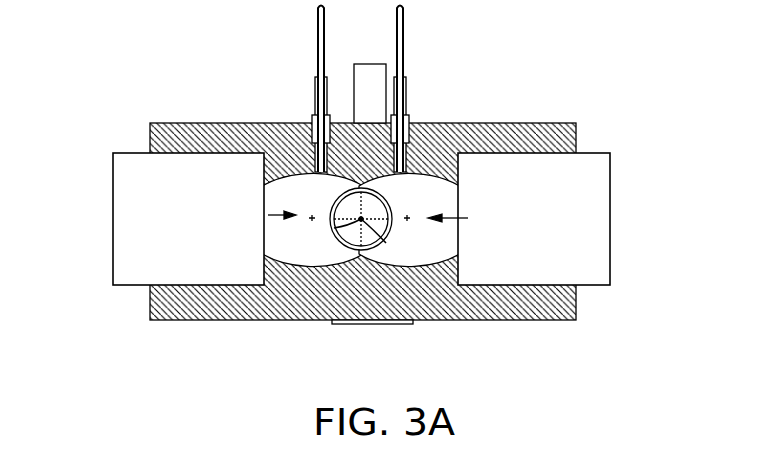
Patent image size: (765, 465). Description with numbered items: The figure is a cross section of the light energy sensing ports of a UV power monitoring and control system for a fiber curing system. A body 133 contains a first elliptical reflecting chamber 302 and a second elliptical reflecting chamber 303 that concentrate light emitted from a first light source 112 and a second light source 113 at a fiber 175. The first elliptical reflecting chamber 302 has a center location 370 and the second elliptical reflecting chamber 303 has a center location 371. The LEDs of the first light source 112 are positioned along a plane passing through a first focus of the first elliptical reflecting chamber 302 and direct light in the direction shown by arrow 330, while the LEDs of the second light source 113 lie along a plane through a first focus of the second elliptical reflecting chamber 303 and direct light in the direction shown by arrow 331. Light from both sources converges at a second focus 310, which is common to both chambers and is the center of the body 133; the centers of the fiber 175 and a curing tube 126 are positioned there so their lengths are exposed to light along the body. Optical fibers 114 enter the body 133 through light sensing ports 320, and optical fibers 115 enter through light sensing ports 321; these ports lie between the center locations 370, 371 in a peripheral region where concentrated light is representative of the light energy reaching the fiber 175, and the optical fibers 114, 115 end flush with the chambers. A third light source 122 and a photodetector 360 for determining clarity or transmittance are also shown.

The first light source 112 is at (130, 286).
The second light source 113 is at (592, 286).
The optical fibers 114 is at (318, 32).
The optical fibers 115 is at (404, 32).
The third light source 122 is at (383, 63).
The curing tube 126 is at (368, 250).
The body 133 is at (527, 321).
The fiber 175 is at (386, 240).
The first elliptical reflecting chamber 302 is at (332, 199).
The second elliptical reflecting chamber 303 is at (437, 199).
The second focus 310 is at (334, 226).
The light sensing ports 320 is at (316, 168).
The light sensing ports 321 is at (408, 168).
The arrow 330 is at (268, 215).
The arrow 331 is at (468, 218).
The photodetector 360 is at (397, 325).
The center location 370 is at (312, 218).
The center location 371 is at (410, 219).